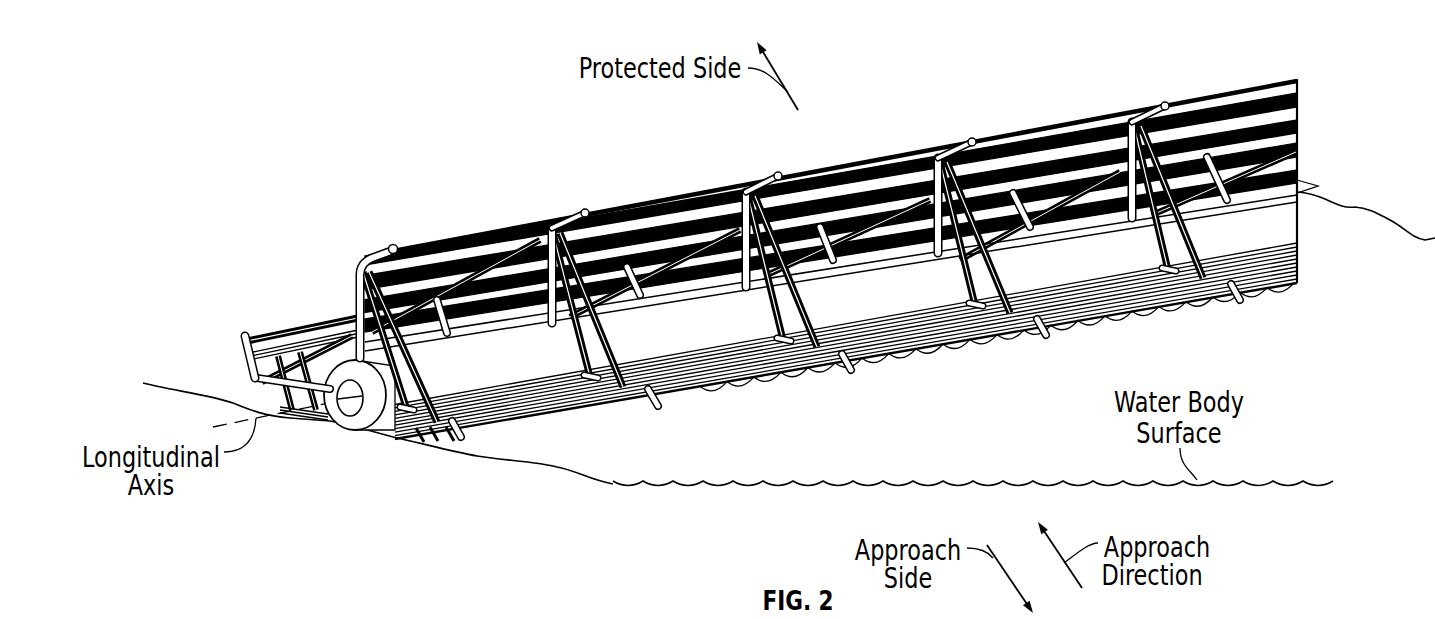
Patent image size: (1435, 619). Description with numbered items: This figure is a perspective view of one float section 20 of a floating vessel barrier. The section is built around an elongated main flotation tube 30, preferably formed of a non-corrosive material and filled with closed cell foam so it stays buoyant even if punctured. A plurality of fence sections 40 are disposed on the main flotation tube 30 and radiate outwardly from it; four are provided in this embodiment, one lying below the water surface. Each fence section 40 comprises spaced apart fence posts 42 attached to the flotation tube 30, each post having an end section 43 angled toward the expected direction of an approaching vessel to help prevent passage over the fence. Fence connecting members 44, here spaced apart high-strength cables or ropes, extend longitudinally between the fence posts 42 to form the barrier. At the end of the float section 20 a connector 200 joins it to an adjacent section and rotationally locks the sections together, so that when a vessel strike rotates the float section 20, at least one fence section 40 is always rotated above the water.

The float section 20 is at (1039, 104).
The main flotation tube 30 is at (481, 378).
The fence section 40 is at (288, 357).
The fence post 42 is at (360, 296).
The end section 43 is at (380, 262).
The fence connecting member 44 is at (440, 232).
The connector 200 is at (349, 410).